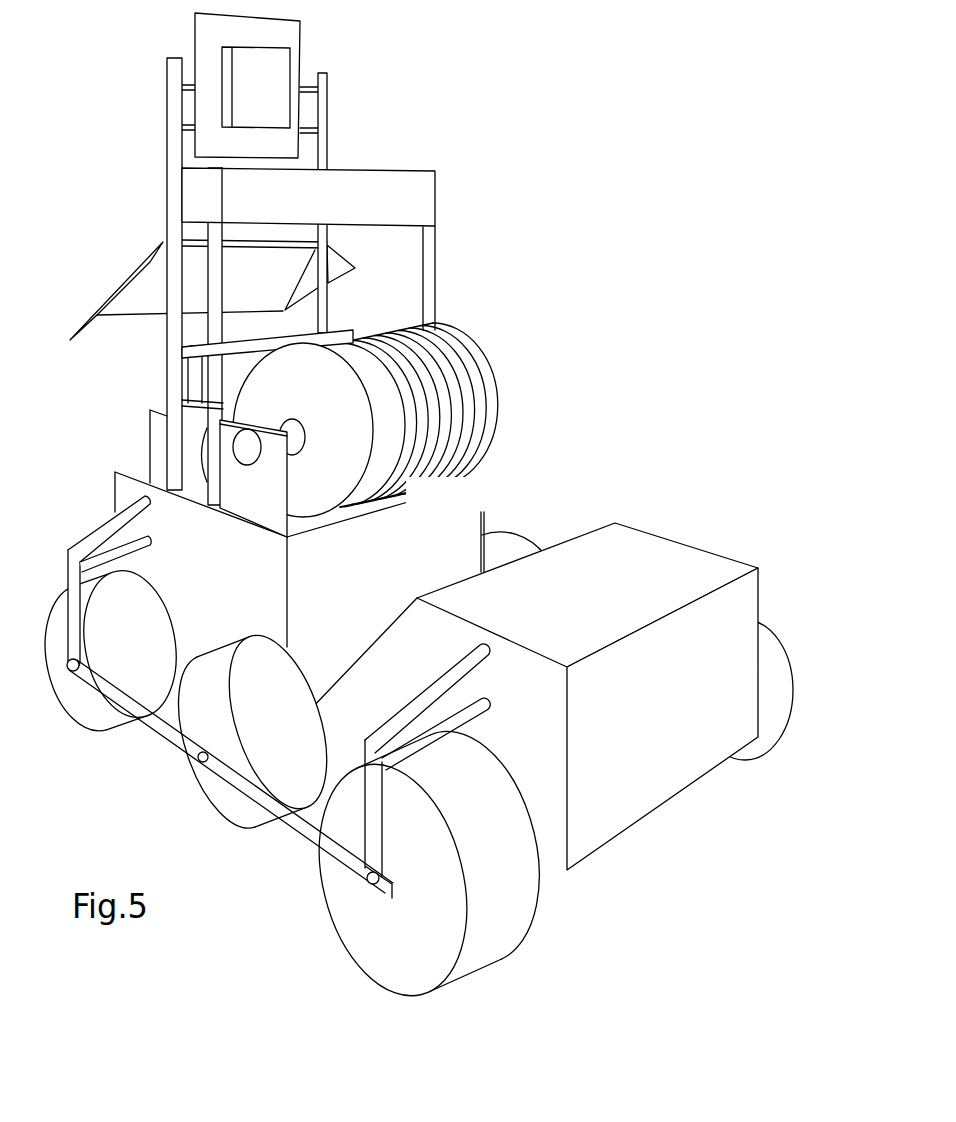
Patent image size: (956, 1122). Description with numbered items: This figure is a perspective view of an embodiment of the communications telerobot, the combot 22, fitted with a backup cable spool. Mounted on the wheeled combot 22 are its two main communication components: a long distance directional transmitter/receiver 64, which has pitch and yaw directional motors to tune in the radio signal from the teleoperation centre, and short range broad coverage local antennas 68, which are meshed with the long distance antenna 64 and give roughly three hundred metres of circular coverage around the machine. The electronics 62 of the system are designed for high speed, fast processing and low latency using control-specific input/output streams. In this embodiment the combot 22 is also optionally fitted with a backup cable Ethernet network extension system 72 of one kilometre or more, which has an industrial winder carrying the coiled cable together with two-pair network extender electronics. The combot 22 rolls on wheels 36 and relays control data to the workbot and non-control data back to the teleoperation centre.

The long distance directional transmitter/receiver 64 is at (262, 93).
The local antenna 68 is at (357, 190).
The electronics 62 is at (442, 381).
The backup cable Ethernet network extension system 72 is at (443, 367).
The combot 22 is at (428, 538).
The wheel 36 is at (463, 843).